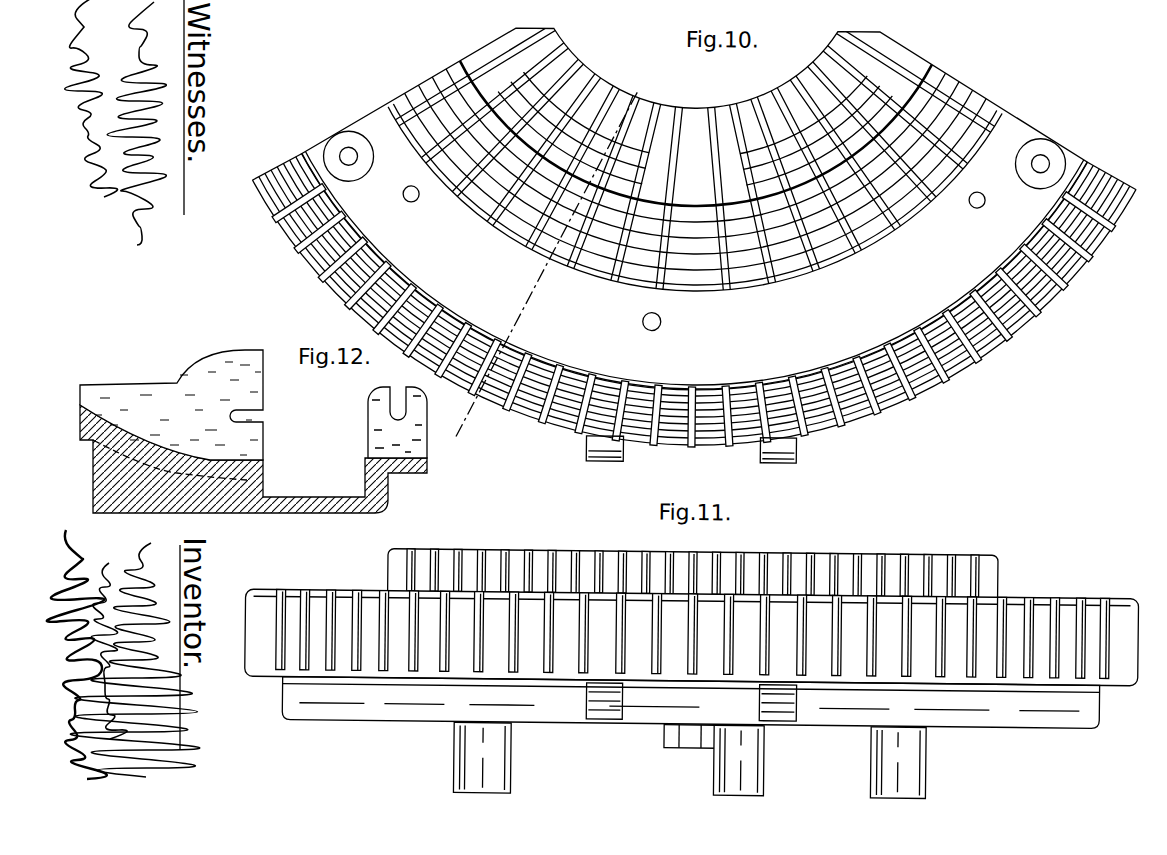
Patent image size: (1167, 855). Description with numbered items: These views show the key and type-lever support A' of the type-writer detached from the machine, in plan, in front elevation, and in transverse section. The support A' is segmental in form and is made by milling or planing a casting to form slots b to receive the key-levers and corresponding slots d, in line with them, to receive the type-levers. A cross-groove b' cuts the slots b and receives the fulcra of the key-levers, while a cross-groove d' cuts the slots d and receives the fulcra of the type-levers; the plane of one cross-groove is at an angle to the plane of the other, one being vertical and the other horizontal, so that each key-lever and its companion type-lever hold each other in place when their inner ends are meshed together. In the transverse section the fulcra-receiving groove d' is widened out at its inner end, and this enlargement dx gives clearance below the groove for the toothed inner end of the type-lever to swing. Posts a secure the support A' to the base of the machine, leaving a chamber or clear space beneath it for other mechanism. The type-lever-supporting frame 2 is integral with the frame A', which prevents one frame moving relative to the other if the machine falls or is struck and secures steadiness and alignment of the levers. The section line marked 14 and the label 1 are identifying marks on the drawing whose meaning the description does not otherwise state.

In FIG. 10, the posts a is at (691, 449).
In FIG. 11, the posts a is at (689, 760).
In FIG. 10, the slots b is at (676, 225).
In FIG. 11, the slots b is at (692, 619).
In FIG. 12, the slots b is at (397, 422).
In FIG. 10, the cross-groove b' is at (687, 288).
In FIG. 12, the cross-groove b' is at (398, 401).
In FIG. 10, the slots d is at (696, 146).
In FIG. 12, the slots d is at (171, 405).
In FIG. 12, the cross-groove d' is at (281, 412).
In FIG. 12, the enlargement dx is at (238, 444).
In FIG. 10, the support A' is at (697, 197).
In FIG. 11, the support A' is at (691, 650).
In FIG. 12, the support A' is at (254, 459).
In FIG. 10, the section line 14- 14 is at (547, 261).
In FIG. 10, the type-lever-supporting frame 2 is at (692, 153).
In FIG. 10, the plate body 1 is at (731, 339).